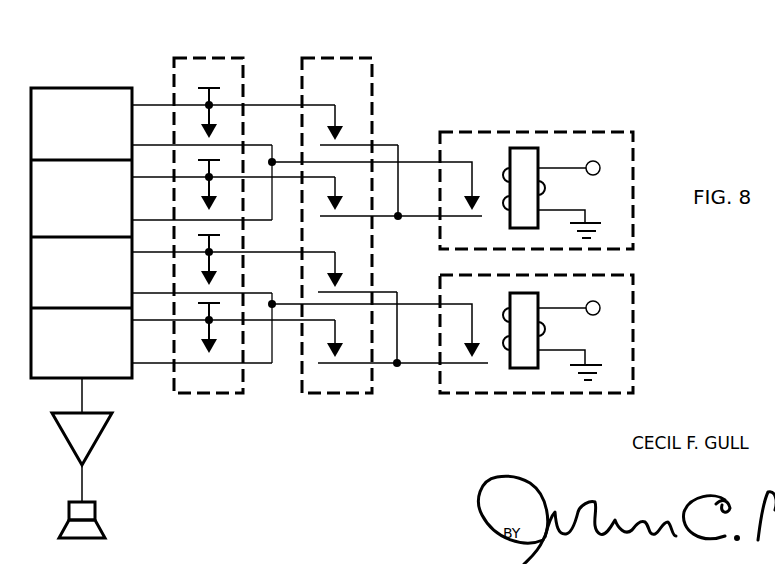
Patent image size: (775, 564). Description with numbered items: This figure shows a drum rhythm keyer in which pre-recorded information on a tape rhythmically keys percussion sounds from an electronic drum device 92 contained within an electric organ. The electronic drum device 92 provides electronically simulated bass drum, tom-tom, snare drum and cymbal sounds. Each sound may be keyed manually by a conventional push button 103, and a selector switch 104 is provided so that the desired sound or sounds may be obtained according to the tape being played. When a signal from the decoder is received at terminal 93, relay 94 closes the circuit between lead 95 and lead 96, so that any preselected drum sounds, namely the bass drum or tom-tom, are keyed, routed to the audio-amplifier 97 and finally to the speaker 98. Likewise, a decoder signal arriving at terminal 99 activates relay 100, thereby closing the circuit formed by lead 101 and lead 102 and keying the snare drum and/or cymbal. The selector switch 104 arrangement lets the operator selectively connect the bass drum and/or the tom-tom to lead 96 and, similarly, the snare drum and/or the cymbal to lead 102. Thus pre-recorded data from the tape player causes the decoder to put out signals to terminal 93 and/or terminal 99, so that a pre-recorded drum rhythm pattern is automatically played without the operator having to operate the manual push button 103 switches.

The electronic drum device 92 is at (97, 86).
The terminal 93 is at (600, 168).
The relay 94 is at (525, 148).
The lead 95 is at (422, 162).
The lead 96 is at (422, 218).
The audio-amplifier 97 is at (63, 440).
The speaker 98 is at (68, 522).
The terminal 99 is at (600, 307).
The relay 100 is at (523, 368).
The circuit lead 101 is at (420, 303).
The lead 102 is at (422, 366).
The push button 103 is at (218, 56).
The selector switch 104 is at (342, 56).